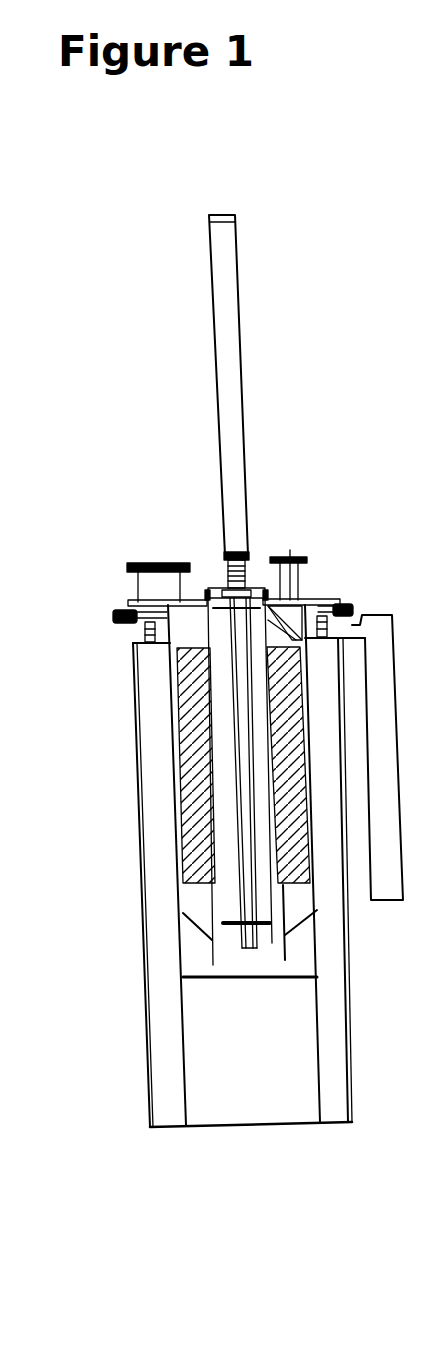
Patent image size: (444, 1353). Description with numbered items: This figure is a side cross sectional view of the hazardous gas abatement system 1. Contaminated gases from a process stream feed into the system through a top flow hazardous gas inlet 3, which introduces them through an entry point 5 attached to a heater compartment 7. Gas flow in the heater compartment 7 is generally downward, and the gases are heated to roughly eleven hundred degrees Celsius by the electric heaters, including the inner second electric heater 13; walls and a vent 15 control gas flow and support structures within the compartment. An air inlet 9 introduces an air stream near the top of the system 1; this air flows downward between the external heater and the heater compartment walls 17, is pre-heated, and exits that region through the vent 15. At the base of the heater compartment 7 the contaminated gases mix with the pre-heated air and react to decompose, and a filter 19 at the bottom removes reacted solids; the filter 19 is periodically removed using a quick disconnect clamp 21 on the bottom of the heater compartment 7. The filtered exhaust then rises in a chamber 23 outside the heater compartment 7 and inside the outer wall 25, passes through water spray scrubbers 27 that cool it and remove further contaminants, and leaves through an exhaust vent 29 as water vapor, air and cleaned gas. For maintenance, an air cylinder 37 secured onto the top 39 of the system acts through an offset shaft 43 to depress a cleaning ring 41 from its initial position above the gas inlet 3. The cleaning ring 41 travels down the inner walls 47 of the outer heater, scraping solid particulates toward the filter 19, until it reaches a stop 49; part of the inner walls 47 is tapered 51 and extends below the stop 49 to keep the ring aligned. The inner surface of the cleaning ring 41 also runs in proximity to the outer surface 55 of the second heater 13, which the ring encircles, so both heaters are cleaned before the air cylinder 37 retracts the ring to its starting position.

The hazardous gas abatement system 1 is at (103, 847).
The hazardous gas inlet 3 is at (292, 552).
The entry point 5 is at (310, 602).
The heater compartment 7 is at (182, 952).
The air inlet 9 is at (400, 818).
The second electric heater 13 is at (247, 895).
The vent 15 is at (260, 927).
The heater compartment walls 17 is at (177, 858).
The filter 19 is at (184, 1062).
The quick disconnect clamp 21 is at (353, 910).
The chamber 23 is at (153, 737).
The outer wall 25 is at (137, 680).
The water spray scrubbers 27 is at (120, 622).
The exhaust vent 29 is at (160, 563).
The air cylinder 37 is at (243, 453).
The top 39 is at (220, 592).
The cleaning ring 41 is at (213, 592).
The offset shaft 43 is at (247, 585).
The inner walls of the heater 47 is at (270, 733).
The stop 49 is at (232, 927).
The tapered portion 51 is at (270, 927).
The outer surface of the second heater 55 is at (235, 760).